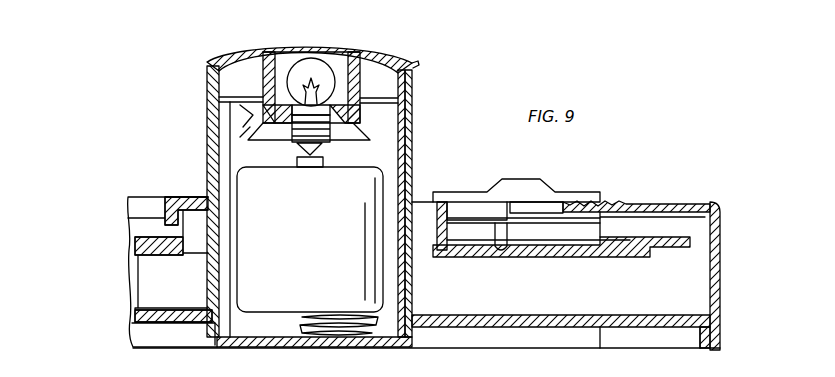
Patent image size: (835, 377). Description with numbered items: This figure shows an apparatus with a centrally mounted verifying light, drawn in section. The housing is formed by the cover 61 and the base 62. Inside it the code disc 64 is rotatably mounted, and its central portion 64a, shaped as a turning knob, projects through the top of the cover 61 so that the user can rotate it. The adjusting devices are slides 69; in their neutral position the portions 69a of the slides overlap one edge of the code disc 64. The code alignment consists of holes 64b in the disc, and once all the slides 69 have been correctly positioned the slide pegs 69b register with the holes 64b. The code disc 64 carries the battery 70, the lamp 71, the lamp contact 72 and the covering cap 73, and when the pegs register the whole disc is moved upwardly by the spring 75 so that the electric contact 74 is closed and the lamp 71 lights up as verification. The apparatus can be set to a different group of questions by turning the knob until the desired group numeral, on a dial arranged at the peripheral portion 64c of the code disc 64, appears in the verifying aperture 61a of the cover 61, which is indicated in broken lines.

The cover 61 is at (722, 266).
The verifying aperture 61a is at (673, 195).
The base 62 is at (660, 317).
The code disc 64 is at (626, 258).
The central portion 64a is at (414, 132).
The holes 64b is at (552, 260).
The peripheral portion 64c is at (698, 217).
The slides 69 is at (533, 186).
The portions 69a is at (443, 196).
The slide pegs 69b is at (494, 257).
The battery 70 is at (310, 239).
The lamp 71 is at (313, 60).
The lamp contact 72 is at (363, 142).
The covering cap 73 is at (416, 62).
The electric contact 74 is at (233, 136).
The spring 75 is at (306, 312).